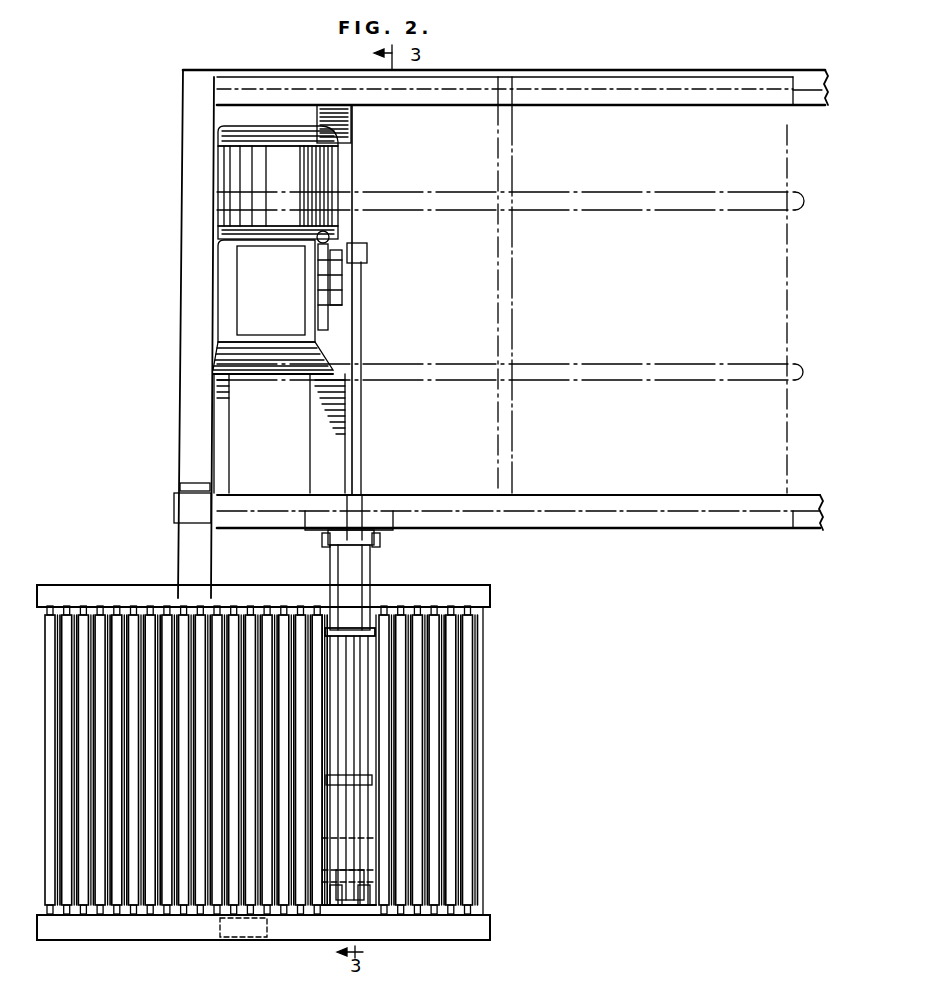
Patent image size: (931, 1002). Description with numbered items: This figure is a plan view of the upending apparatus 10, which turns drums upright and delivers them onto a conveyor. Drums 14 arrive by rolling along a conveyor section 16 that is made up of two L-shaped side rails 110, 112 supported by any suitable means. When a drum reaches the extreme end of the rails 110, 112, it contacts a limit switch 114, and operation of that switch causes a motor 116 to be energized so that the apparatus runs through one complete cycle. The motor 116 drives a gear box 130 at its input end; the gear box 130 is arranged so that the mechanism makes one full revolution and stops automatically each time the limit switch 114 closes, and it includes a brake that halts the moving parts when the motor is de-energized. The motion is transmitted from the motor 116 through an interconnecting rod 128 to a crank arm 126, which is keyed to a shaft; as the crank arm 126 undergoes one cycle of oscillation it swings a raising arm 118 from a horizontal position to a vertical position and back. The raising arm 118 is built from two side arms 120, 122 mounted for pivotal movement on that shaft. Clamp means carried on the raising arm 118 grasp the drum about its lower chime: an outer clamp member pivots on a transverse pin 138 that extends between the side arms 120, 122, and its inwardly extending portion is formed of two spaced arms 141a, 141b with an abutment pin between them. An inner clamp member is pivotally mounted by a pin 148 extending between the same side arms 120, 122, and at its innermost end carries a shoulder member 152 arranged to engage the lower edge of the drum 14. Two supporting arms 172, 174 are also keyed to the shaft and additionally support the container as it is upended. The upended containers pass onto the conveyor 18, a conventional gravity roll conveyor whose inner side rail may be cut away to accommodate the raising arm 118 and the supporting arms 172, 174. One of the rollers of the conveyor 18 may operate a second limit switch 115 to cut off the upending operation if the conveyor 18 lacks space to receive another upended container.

The upending apparatus 10 is at (168, 232).
The drum 14 is at (793, 337).
The conveyor section 16 is at (803, 546).
The conveyor 18 is at (494, 691).
The side rail 110 is at (704, 538).
The side rail 112 is at (731, 76).
The limit switch 114 is at (176, 500).
The limit switch 115 is at (240, 940).
The motor 116 is at (220, 160).
The raising arm 118 is at (326, 917).
The side arm 120 is at (367, 888).
The side arm 122 is at (320, 840).
The crank arm 126 is at (342, 523).
The interconnecting rod 128 is at (364, 330).
The gear box 130 is at (248, 272).
The transverse pin 138 is at (345, 890).
The spaced arm 141a is at (333, 905).
The spaced arm 141b is at (355, 897).
The pin 148 is at (372, 782).
The shoulder member 152 is at (360, 625).
The supporting arm 172 is at (447, 843).
The supporting arm 174 is at (243, 867).